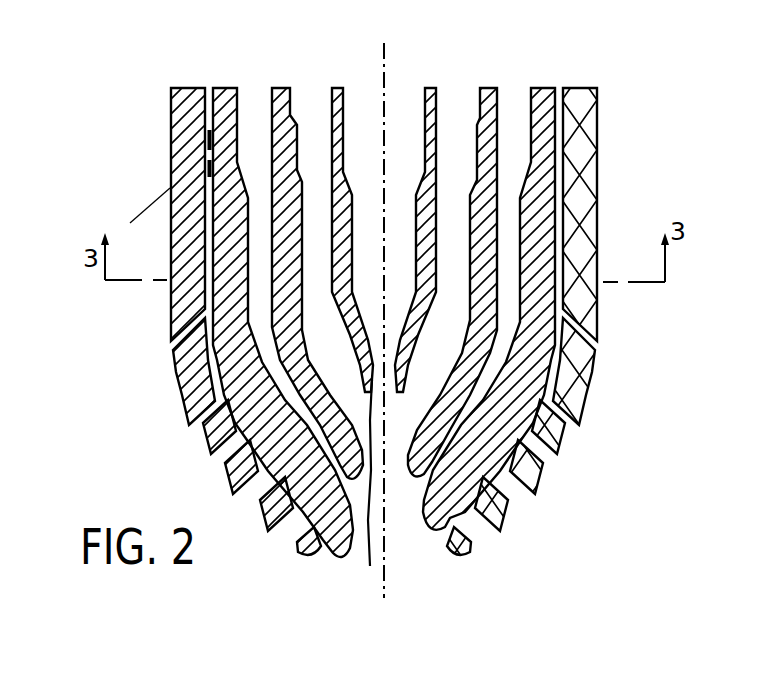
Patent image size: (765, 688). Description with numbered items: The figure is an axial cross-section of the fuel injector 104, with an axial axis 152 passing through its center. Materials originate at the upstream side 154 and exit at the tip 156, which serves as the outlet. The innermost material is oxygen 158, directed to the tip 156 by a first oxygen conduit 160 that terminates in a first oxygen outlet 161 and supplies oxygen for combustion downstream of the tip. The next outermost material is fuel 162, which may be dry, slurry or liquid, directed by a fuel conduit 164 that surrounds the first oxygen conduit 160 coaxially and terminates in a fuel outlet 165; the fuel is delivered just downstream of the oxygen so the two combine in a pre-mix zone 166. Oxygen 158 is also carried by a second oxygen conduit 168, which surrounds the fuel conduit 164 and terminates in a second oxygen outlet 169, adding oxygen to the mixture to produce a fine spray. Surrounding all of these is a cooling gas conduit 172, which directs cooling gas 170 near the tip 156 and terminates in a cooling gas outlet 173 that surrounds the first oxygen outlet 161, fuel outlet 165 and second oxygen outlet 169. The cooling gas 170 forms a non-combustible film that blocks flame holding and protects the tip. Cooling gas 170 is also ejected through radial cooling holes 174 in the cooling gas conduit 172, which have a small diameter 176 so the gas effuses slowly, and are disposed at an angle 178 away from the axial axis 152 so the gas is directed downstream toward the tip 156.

The fuel injector 104 is at (653, 46).
The axial axis 152 is at (384, 64).
The upstream side 154 is at (56, 129).
The tip 156 is at (350, 628).
The oxygen 158 is at (256, 96).
The first oxygen conduit 160 is at (430, 91).
The first oxygen outlet 161 is at (370, 562).
The fuel 162 is at (310, 94).
The fuel conduit 164 is at (487, 91).
The fuel outlet 165 is at (352, 550).
The pre-mix zone 166 is at (391, 437).
The second oxygen conduit 168 is at (541, 91).
The second oxygen outlet 169 is at (306, 560).
The cooling gas 170 is at (212, 90).
The cooling gas conduit 172 is at (581, 95).
The cooling gas outlet 173 is at (300, 550).
The radial cooling holes 174 is at (170, 133).
The diameter 176 is at (205, 143).
The angle 178 is at (166, 218).